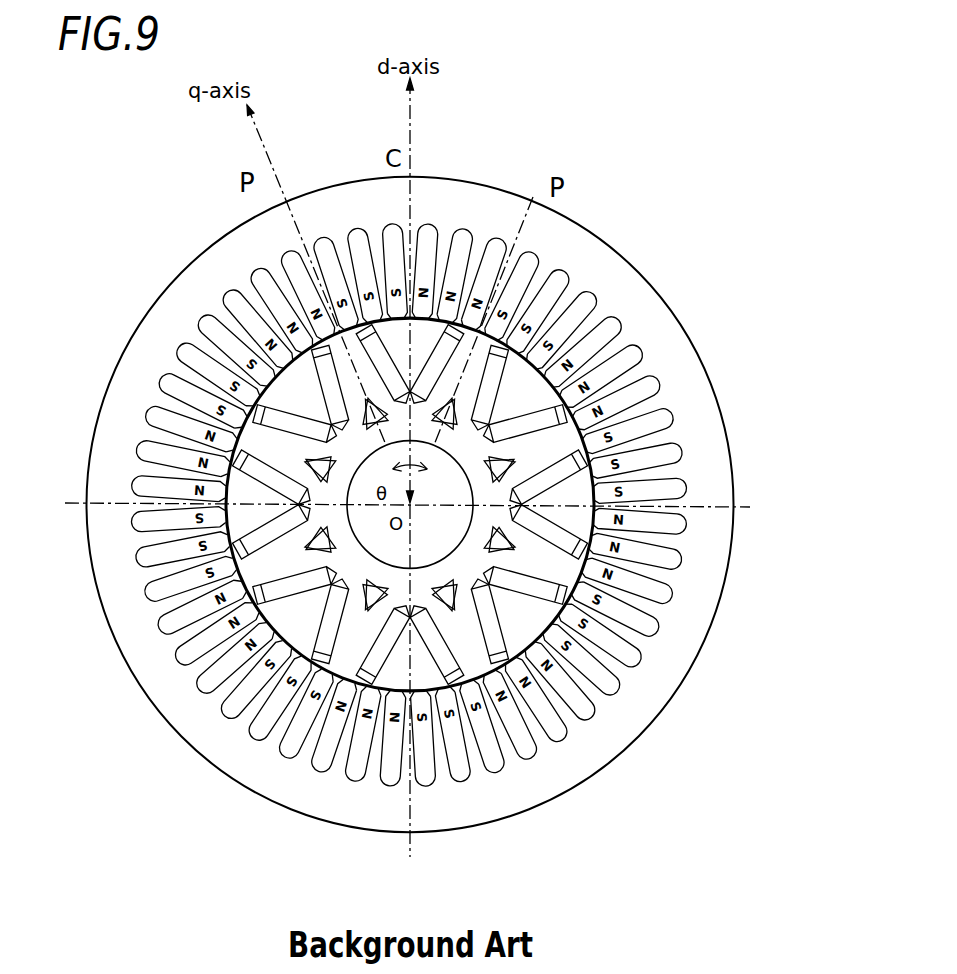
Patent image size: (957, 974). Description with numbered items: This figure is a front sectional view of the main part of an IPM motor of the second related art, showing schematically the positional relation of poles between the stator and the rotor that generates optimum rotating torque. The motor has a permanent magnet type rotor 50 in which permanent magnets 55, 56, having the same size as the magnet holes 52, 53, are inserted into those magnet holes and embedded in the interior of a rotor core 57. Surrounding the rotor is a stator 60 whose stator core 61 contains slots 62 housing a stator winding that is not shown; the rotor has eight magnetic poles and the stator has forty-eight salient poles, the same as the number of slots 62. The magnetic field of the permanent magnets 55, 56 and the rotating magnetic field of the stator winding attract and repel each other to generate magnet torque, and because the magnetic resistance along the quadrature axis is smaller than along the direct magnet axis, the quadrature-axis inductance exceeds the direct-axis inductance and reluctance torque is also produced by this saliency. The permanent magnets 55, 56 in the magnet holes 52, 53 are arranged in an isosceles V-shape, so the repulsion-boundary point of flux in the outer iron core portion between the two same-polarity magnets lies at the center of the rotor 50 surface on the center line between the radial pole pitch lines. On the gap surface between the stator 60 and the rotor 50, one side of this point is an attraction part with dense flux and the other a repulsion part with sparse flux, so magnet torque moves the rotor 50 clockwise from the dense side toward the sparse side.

The rotor 50 is at (520, 648).
The magnet hole 52 is at (583, 548).
The magnet hole 53 is at (583, 467).
The permanent magnet 55 is at (543, 532).
The permanent magnet 56 is at (550, 480).
The rotor core 57 is at (590, 723).
The stator 60 is at (500, 188).
The stator core 61 is at (663, 316).
The slot 62 is at (630, 360).